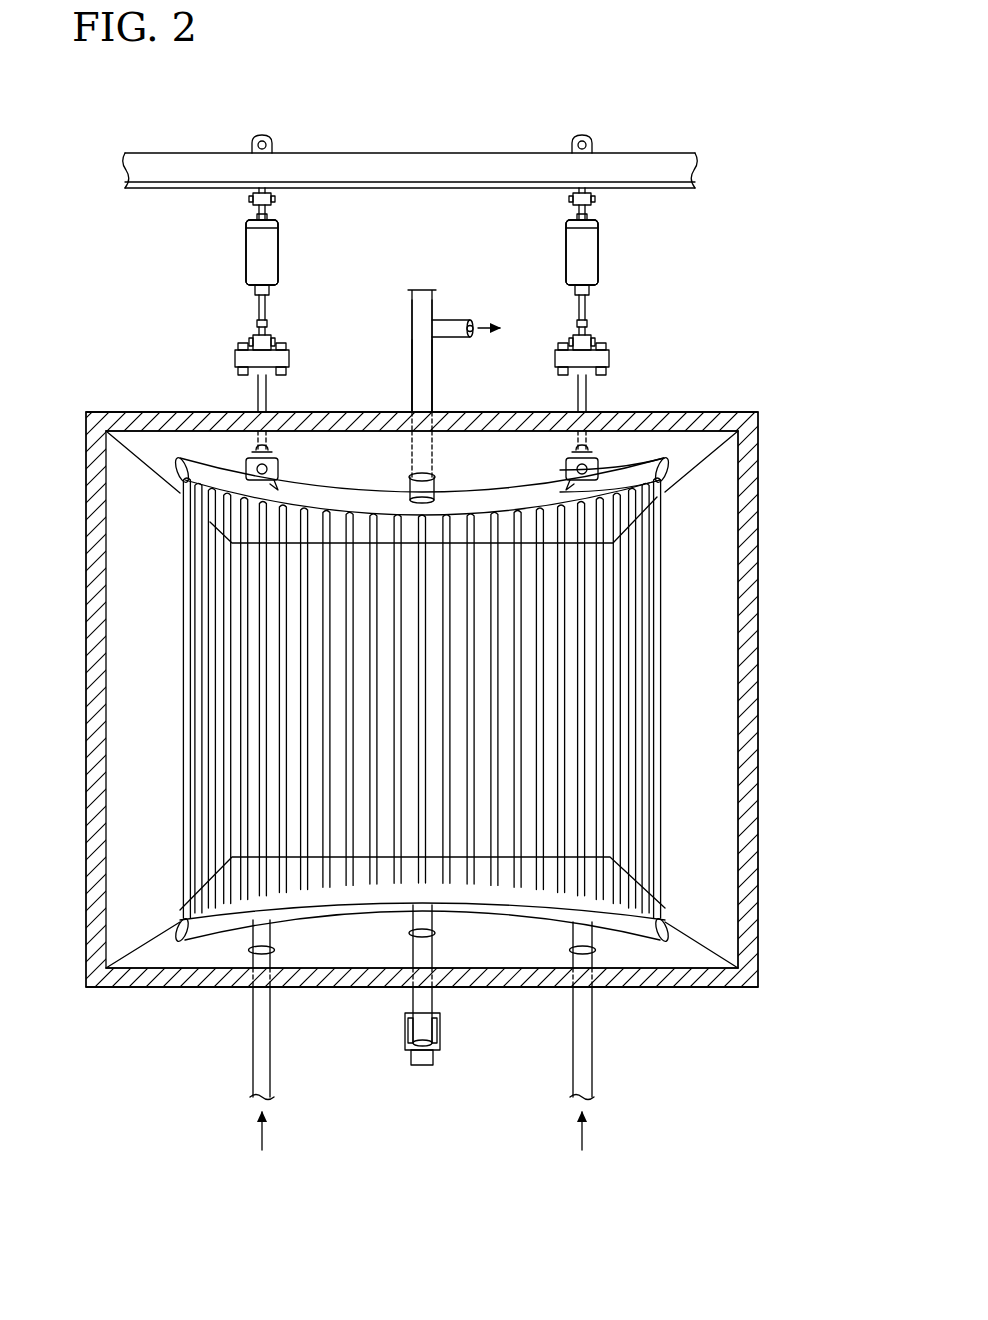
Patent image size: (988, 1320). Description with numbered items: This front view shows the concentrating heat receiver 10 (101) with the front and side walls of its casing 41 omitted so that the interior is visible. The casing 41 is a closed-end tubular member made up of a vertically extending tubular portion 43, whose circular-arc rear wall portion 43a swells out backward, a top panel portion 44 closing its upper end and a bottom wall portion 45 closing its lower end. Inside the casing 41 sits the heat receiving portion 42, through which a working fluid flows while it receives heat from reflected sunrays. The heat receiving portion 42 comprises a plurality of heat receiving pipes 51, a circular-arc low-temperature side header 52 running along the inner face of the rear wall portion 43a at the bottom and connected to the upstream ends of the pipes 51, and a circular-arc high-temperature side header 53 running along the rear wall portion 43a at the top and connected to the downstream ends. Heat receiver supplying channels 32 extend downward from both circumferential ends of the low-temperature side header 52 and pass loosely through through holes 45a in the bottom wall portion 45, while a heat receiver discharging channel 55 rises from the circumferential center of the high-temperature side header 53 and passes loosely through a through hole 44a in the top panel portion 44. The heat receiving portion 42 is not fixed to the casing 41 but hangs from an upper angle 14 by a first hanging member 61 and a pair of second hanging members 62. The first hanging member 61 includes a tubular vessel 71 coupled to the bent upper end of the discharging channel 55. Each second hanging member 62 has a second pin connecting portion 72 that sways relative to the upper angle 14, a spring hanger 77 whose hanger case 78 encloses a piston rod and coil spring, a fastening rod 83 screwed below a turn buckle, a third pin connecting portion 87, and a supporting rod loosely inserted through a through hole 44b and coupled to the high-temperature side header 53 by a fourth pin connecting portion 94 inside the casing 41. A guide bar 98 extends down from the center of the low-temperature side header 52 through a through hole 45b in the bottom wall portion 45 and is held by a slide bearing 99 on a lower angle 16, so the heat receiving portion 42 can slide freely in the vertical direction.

The concentrating heat receiver 10 is at (493, 130).
The heat exchanger 101 is at (493, 130).
The upper angle 14 is at (657, 170).
The second pin connecting portion 72 is at (236, 204).
The second hanging member 62 is at (292, 238).
The spring hanger 77 is at (238, 248).
The hanger case 78 is at (422, 252).
The fastening rod 83 is at (268, 308).
The third pin connecting portion 87 is at (248, 333).
The fourth pin connecting portion 94 is at (238, 453).
The through hole 44b is at (272, 452).
The through hole 44a is at (436, 483).
The top panel portion 44 is at (104, 411).
The tubular vessel 71 is at (432, 302).
The heat receiver discharging channel 55 is at (412, 355).
The first hanging member 61 is at (401, 374).
The high-temperature side header 53 is at (180, 467).
The heat receiving portion 42 is at (674, 461).
The casing 41 is at (770, 590).
The tubular portion 43 is at (422, 699).
The rear wall portion 43a is at (746, 706).
The heat receiving pipes 51 is at (210, 828).
The low-temperature side header 52 is at (178, 935).
The bottom wall portion 45 is at (720, 988).
The through hole 45a is at (274, 950).
The through hole 45b is at (408, 935).
The heat receiver supplying channel 32 is at (260, 1080).
The guide bar 98 is at (432, 995).
The lower angle 16 is at (440, 1025).
The slide bearing 99 is at (411, 1055).